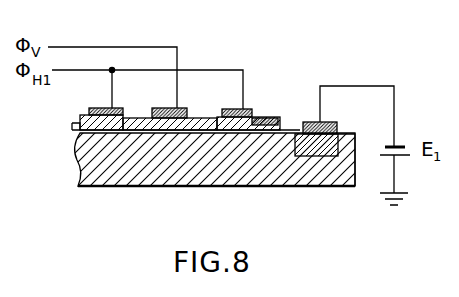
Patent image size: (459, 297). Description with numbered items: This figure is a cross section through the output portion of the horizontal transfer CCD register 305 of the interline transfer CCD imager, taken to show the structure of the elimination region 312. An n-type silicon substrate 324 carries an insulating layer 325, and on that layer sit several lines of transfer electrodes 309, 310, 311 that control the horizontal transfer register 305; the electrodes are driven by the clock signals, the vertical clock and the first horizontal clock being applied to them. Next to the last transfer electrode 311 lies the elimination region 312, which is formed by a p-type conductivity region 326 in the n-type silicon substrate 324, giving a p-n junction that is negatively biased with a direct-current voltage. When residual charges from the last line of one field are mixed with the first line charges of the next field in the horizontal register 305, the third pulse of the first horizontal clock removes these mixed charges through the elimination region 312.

The horizontal transfer CCD register 305 is at (335, 172).
The transfer electrode 309 is at (150, 96).
The transfer electrode 310 is at (212, 97).
The transfer electrode 311 is at (267, 112).
The elimination region 312 is at (328, 122).
The n-type silicon substrate 324 is at (150, 158).
The insulating layer 325 is at (72, 131).
The p-type conductivity region 326 is at (301, 158).